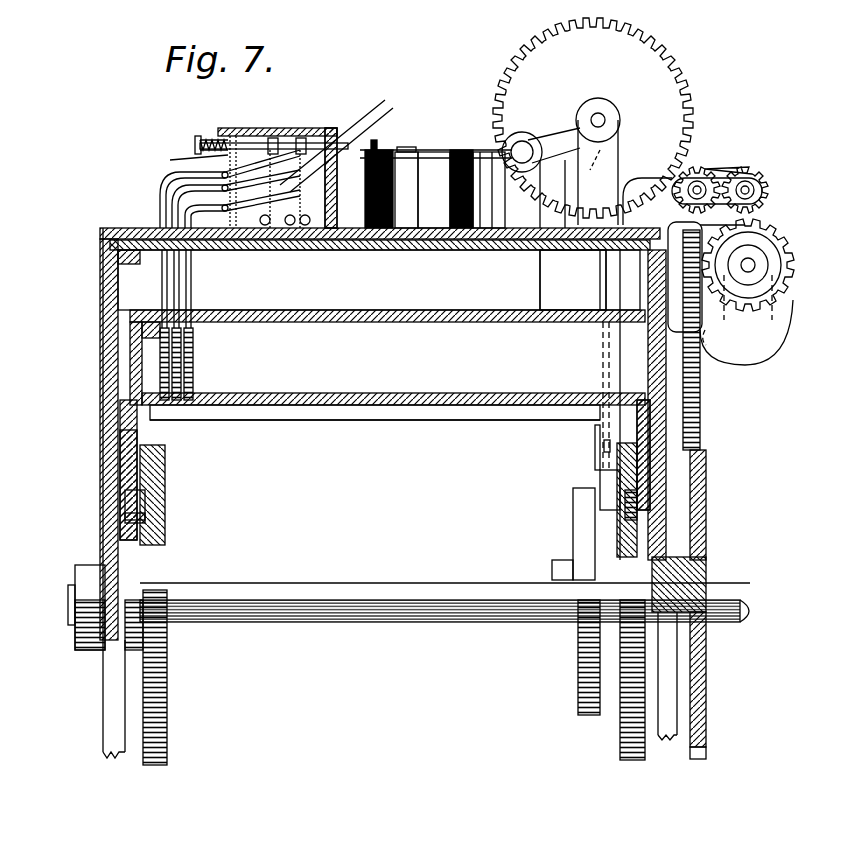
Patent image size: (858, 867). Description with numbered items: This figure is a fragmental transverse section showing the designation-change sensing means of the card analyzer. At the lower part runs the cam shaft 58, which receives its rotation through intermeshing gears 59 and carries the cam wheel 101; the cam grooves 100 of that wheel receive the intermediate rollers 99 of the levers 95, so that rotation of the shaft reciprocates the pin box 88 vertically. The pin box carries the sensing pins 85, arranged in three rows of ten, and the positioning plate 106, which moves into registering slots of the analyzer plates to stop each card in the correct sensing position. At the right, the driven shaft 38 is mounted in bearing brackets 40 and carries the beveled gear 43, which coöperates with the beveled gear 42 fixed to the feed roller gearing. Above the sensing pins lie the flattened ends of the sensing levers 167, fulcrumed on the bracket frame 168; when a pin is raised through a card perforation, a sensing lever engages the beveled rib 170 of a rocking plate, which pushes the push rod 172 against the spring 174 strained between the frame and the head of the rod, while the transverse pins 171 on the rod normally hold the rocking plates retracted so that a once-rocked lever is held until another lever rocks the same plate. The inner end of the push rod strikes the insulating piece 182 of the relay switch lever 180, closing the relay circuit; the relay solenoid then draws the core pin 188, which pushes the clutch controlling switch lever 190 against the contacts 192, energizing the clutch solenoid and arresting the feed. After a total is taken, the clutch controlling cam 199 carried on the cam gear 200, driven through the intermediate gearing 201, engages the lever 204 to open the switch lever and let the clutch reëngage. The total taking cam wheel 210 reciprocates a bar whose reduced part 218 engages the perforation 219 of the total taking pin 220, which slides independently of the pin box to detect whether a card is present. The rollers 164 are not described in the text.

The driven shaft 38 is at (752, 272).
The bearing brackets 40 is at (762, 258).
The beveled gear 42 is at (700, 338).
The beveled gear 43 is at (782, 282).
The cam shaft 58 is at (426, 595).
The intermeshing gears 59 is at (700, 438).
The sensing pins 85 is at (190, 303).
The pin box 88 is at (283, 420).
The levers 95 is at (137, 440).
The intermediate rollers 99 is at (145, 492).
The cam grooves 100 is at (145, 518).
The cam wheel 101 is at (167, 720).
The positioning plate 106 is at (379, 280).
The rollers 164 is at (300, 210).
The sensing levers 167 is at (160, 190).
The bracket frame 168 is at (188, 147).
The beveled rib 170 is at (340, 136).
The transverse pins 171 is at (312, 140).
The push rod 172 is at (255, 140).
The spring 174 is at (208, 138).
The relay switch lever 180 is at (378, 142).
The insulating piece 182 is at (347, 178).
The core pin 188 is at (520, 145).
The clutch controlling switch lever 190 is at (440, 146).
The contacts 192 is at (402, 148).
The clutch controlling cam 199 is at (612, 160).
The cam gear 200 is at (682, 108).
The intermediate gearing 201 is at (785, 215).
The lever 204 is at (570, 135).
The total taking cam wheel 210 is at (575, 536).
The reduced part 218 is at (596, 450).
The perforation 219 is at (605, 445).
The total taking pin 220 is at (603, 286).